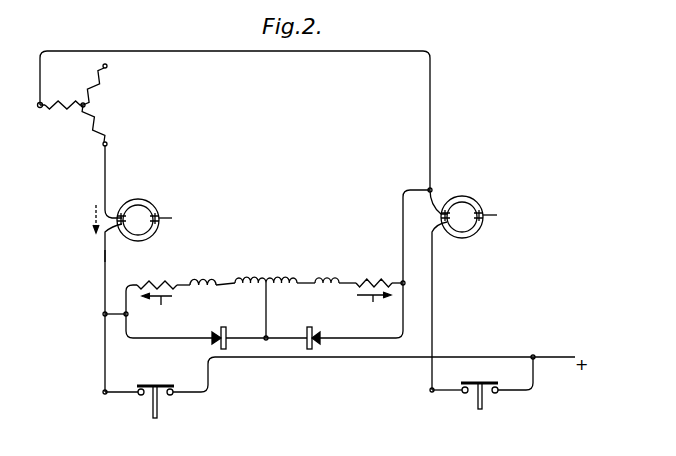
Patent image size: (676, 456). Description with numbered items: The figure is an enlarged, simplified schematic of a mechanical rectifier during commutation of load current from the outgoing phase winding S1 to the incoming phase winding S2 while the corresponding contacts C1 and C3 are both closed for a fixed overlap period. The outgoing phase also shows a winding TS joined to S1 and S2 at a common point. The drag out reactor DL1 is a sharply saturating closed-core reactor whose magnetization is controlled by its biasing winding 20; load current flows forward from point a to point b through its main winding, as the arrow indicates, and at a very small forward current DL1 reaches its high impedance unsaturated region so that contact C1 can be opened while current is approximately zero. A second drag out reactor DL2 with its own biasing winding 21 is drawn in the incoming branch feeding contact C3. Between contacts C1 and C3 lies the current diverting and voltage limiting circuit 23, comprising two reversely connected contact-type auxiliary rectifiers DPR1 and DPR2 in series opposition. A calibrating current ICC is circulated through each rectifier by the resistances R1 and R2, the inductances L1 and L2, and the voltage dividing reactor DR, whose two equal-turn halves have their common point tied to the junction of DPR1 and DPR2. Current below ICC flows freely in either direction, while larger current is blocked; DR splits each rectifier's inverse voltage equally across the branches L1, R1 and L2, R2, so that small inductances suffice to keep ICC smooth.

The biasing winding 20 is at (176, 219).
The discharge lamp DL2 terminal 21 is at (500, 216).
The current diverting and voltage limiting circuit 23 is at (277, 247).
The outgoing phase winding S1 is at (86, 124).
The incoming phase winding S2 is at (62, 103).
The resistor TS is at (95, 87).
The drag out reactor DL1 is at (138, 212).
The discharge lamp DL2 is at (462, 209).
The resistance R1 is at (158, 282).
The resistance R2 is at (373, 281).
The inductance L1 is at (203, 279).
The inductance L2 is at (327, 278).
The voltage dividing reactor DR is at (266, 278).
The auxiliary rectifier DPR1 is at (234, 322).
The auxiliary rectifier DPR2 is at (308, 328).
The calibrating current ICC is at (266, 308).
The contact C1 is at (166, 395).
The contact C3 is at (490, 390).
The point a is at (93, 208).
The point b is at (98, 257).